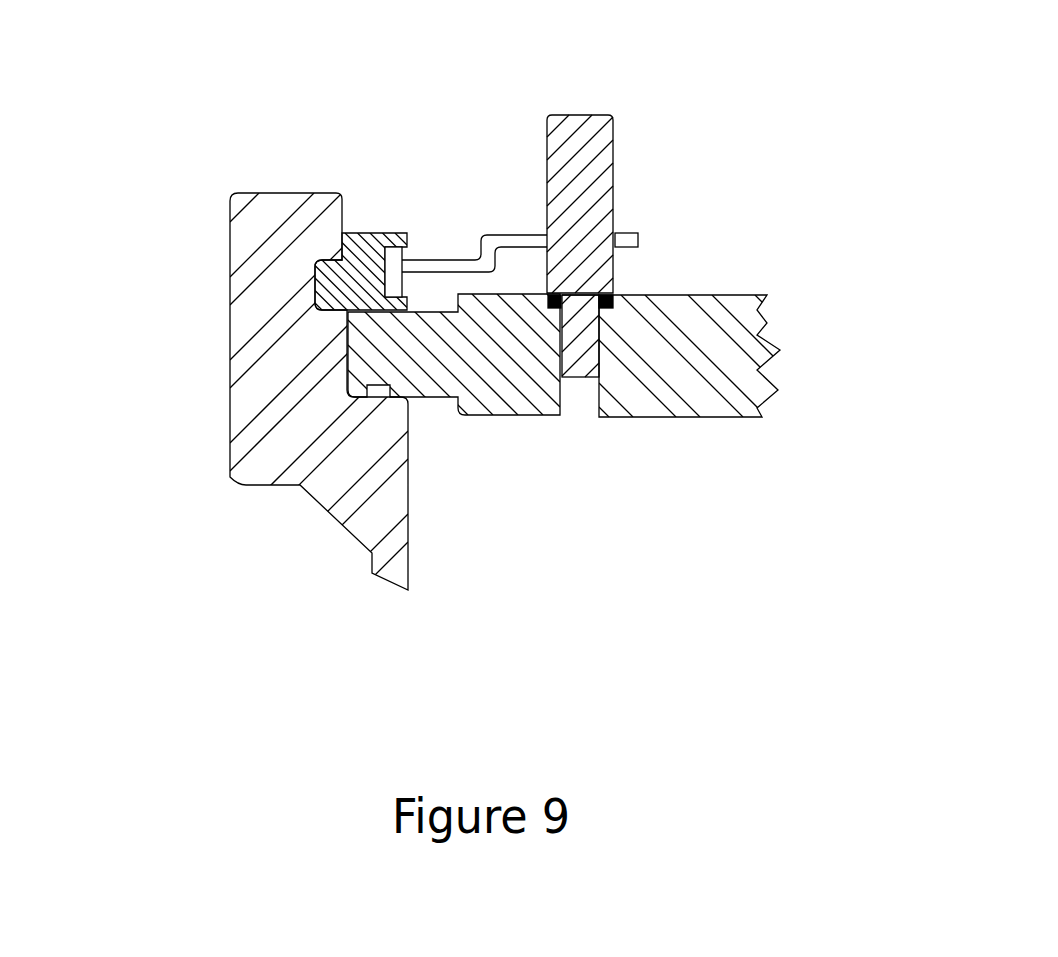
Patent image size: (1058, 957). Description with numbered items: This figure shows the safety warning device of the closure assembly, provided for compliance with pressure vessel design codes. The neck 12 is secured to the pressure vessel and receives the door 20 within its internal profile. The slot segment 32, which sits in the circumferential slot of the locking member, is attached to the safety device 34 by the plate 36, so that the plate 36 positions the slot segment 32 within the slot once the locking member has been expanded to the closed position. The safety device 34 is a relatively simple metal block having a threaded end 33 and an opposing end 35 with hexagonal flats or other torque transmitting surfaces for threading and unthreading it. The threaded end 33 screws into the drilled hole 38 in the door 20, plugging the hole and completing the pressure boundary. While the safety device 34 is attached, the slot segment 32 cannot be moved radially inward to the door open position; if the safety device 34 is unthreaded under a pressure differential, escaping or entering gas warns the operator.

The neck 12 is at (248, 422).
The door 20 is at (723, 393).
The slot segment 32 is at (372, 250).
The threaded end 33 is at (579, 362).
The safety device 34 is at (593, 183).
The opposing end 35 is at (577, 130).
The plate 36 is at (502, 237).
The drilled hole 38 is at (582, 410).